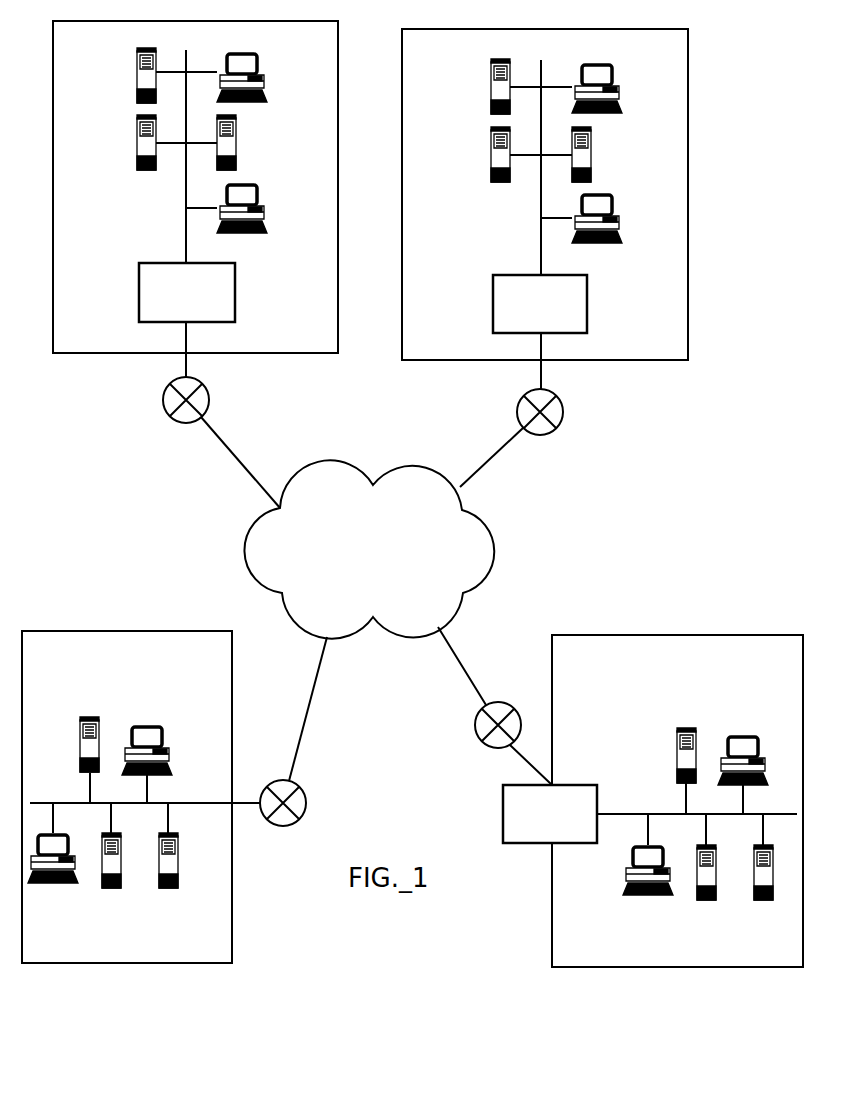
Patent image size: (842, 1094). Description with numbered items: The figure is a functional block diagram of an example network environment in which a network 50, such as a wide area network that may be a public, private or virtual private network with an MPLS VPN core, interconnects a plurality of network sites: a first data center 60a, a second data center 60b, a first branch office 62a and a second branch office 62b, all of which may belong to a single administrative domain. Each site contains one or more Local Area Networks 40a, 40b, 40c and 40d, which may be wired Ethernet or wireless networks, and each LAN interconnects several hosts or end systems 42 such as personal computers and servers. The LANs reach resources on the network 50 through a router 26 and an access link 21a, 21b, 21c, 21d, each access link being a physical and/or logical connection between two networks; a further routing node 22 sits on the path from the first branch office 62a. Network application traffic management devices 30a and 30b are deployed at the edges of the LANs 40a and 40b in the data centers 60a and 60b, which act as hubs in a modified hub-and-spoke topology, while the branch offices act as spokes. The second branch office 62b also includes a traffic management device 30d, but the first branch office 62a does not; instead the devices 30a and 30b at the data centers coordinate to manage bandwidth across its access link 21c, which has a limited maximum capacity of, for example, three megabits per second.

The hosts or end systems 42 is at (137, 92).
The Local Area Network 40a is at (160, 215).
The Local Area Network 40b is at (507, 228).
The Local Area Network 40c is at (70, 760).
The Local Area Network 40d is at (758, 735).
The network application traffic management device 30a is at (236, 292).
The network application traffic management device 30b is at (588, 302).
The network application traffic management device 30d is at (523, 843).
The first data center 60a is at (122, 353).
The second data center 60b is at (472, 360).
The first branch office 62a is at (73, 631).
The second branch office 62b is at (740, 635).
The router 26 is at (208, 400).
The router 22 is at (270, 777).
The access link 21a is at (220, 458).
The access link 21b is at (503, 462).
The access link 21c is at (308, 693).
The access link 21d is at (460, 670).
The network 50 is at (503, 551).